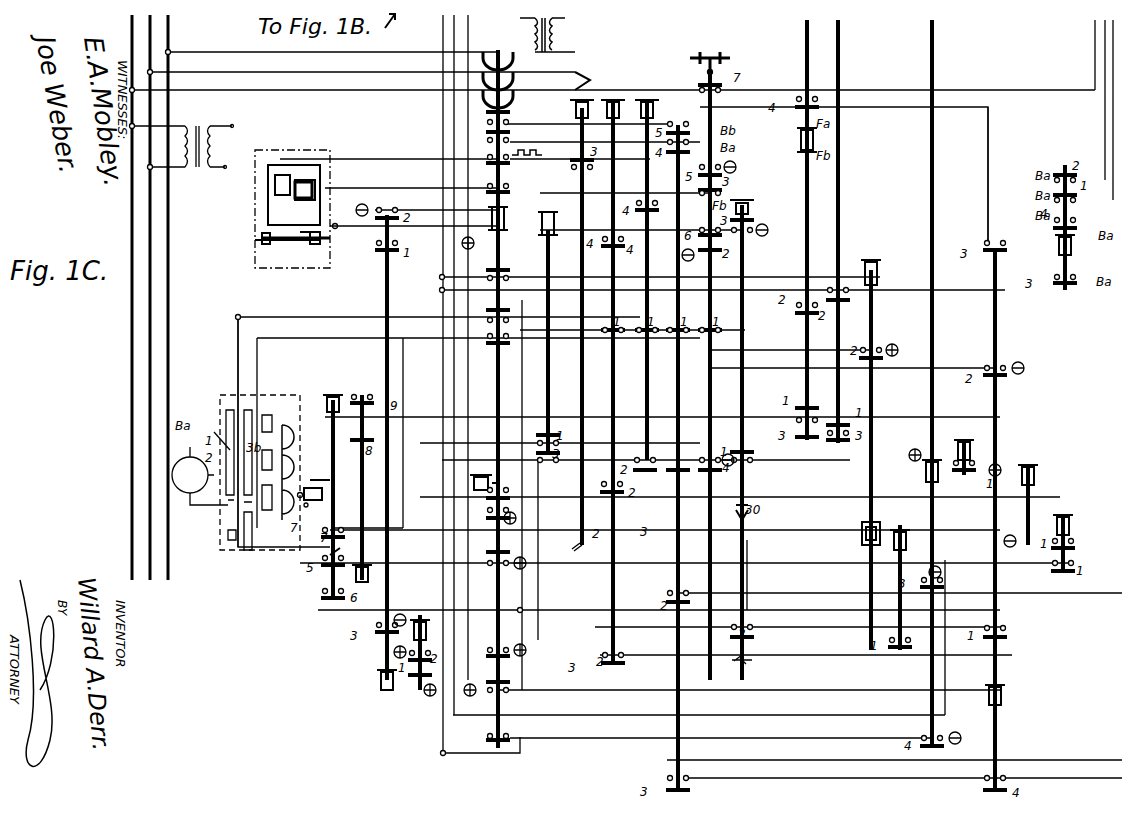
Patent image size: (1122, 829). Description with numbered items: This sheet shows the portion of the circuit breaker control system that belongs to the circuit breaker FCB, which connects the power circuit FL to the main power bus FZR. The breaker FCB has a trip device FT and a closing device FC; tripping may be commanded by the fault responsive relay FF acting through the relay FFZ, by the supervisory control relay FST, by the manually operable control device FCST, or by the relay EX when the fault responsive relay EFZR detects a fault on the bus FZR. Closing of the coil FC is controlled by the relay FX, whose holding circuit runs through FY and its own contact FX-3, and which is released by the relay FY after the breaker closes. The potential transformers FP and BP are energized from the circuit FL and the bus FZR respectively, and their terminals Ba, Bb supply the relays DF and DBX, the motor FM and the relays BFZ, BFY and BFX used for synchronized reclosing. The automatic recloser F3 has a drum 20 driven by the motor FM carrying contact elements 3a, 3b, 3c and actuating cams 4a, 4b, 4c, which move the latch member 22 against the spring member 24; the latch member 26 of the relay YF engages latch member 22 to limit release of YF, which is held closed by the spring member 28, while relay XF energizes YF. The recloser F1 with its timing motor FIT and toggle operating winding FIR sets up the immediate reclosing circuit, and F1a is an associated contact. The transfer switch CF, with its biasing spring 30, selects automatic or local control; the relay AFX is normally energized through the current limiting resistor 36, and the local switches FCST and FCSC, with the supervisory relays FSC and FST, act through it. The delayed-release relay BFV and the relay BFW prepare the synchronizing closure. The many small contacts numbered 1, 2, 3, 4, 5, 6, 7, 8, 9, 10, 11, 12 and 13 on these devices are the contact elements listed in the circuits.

The contact element 1 is at (486, 310).
The contact element 2 is at (486, 344).
The contact element 3 is at (486, 270).
The contact element 4 is at (486, 193).
The contact element 5 is at (486, 164).
The contact element 6 is at (486, 552).
The contact element 7 is at (486, 656).
The contact element 8 is at (504, 497).
The contact element 9 is at (486, 519).
The contact element 10 is at (486, 682).
The contact element 11 is at (486, 741).
The contact 12 is at (510, 132).
The contact 13 is at (510, 112).
The drum 20 is at (249, 463).
The latch member 22 is at (306, 504).
The spring member 24 is at (308, 513).
The latch member 26 is at (317, 481).
The spring member 28 is at (323, 555).
The biasing spring 30 is at (740, 515).
The current limiting resistor 36 is at (527, 148).
The contact element 3a is at (268, 492).
The contact element 3b is at (268, 453).
The contact element 3c is at (268, 416).
The cam 4a is at (298, 462).
The cam 4b is at (298, 437).
The cam 4c is at (292, 472).
The main power bus FZR is at (140, 292).
The potential transformer BP is at (182, 137).
The transformer terminal Ba is at (216, 176).
The transformer terminal Bb is at (236, 117).
The reclosing device F1 is at (292, 200).
The timing motor FIT is at (305, 183).
The toggle operating winding FIR is at (262, 240).
The contact F1a is at (339, 228).
The circuit breaker FCB is at (496, 71).
The potential transformer FP is at (543, 30).
The power circuit FL is at (591, 74).
The transfer switch CF is at (709, 55).
The closing device FC is at (490, 227).
The relay AFX is at (533, 218).
The manually operable circuit control device FCST is at (569, 105).
The supervisory control relay FSC is at (611, 96).
The supervisory control relay FST is at (647, 96).
The relay BFX is at (675, 129).
The relay DF is at (793, 140).
The manually operable control device FCSC is at (752, 199).
The relay DBX is at (838, 226).
The relay BFZ is at (868, 266).
The relay BFY is at (1060, 203).
The relay EX is at (932, 430).
The fault responsive relay EFZR is at (957, 439).
The fault responsive relay FF is at (1028, 462).
The relay FFZ is at (1069, 514).
The delayed-release relay BFV is at (886, 529).
The relay BFW is at (1010, 695).
The relay YF is at (332, 394).
The relay XF is at (361, 479).
The relay FX is at (379, 692).
The relay FY is at (415, 667).
The trip device FT is at (476, 474).
The reclosing device F3 is at (284, 432).
The motor FM is at (187, 500).